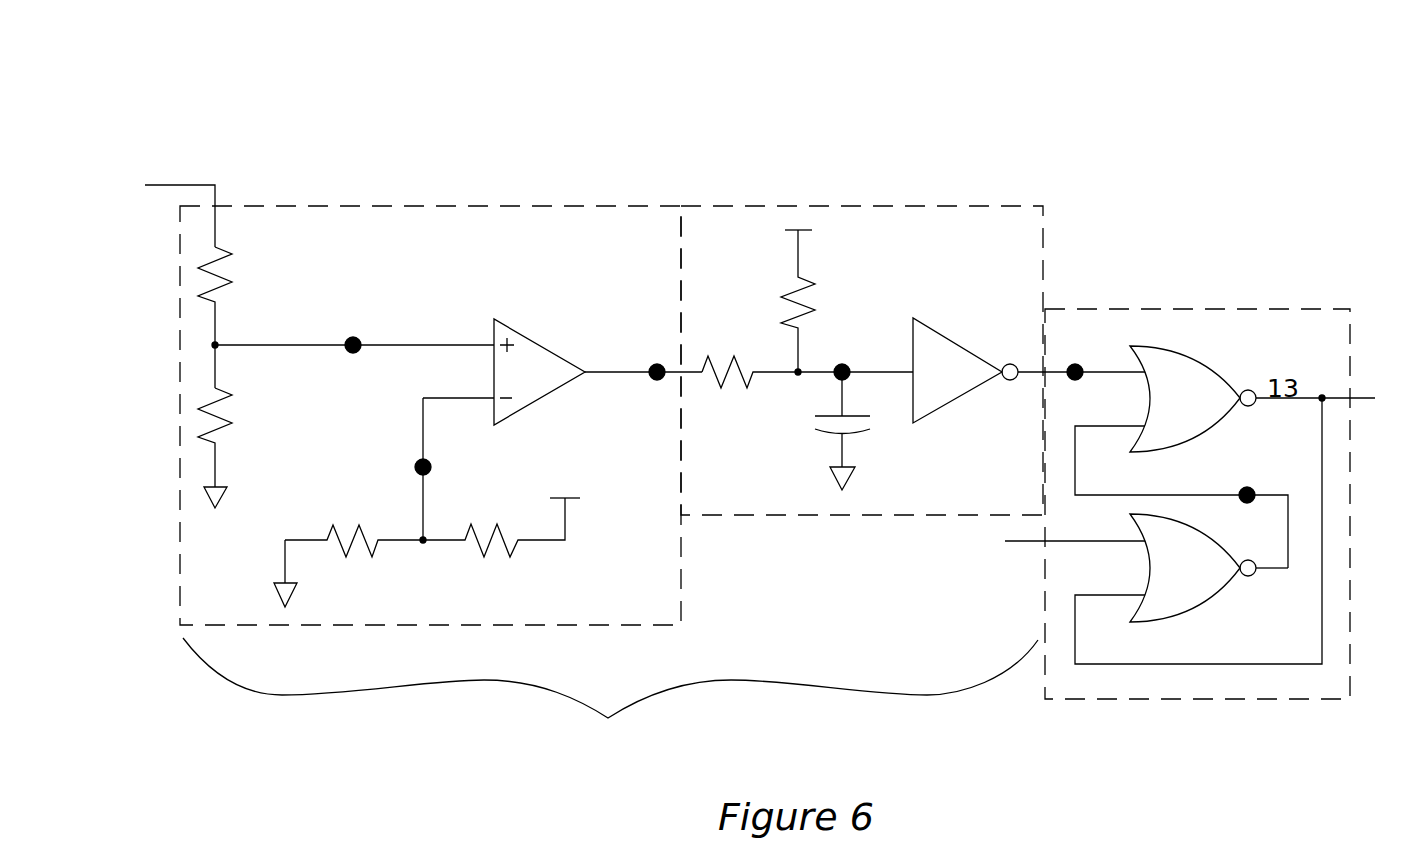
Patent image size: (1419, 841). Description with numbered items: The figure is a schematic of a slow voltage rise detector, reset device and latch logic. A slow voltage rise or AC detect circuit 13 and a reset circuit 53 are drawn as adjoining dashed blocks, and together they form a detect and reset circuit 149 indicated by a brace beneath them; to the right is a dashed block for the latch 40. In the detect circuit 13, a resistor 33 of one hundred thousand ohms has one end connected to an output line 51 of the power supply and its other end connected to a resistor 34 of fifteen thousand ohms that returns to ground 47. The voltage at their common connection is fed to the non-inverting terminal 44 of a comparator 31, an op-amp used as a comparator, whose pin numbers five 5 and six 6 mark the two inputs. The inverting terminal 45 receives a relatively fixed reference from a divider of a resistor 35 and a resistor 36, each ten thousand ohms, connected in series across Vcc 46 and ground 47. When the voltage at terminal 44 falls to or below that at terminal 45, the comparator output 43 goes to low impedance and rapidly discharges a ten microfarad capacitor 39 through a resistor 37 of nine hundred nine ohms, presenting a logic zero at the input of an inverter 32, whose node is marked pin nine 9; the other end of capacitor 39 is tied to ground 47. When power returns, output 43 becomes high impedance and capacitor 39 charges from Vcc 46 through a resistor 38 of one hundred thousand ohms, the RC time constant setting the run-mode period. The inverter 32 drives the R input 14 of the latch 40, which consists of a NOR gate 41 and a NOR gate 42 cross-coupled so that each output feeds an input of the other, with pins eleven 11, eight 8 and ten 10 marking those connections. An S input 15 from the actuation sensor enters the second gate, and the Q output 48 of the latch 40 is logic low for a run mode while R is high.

The slow voltage rise detector 13 is at (413, 206).
The reset circuit 53 is at (878, 206).
The latch 40 is at (1265, 309).
The output line 51 is at (180, 185).
The resistor 33 is at (223, 249).
The resistor 34 is at (223, 390).
The ground 47 is at (205, 498).
The non-inverting terminal 44 is at (403, 343).
The inverting terminal 45 is at (423, 429).
The resistor 36 is at (378, 550).
The resistor 35 is at (516, 550).
The Vcc 46 is at (580, 499).
The comparator 31 is at (510, 327).
The output 43 is at (613, 370).
The resistor 37 is at (736, 386).
The resistor 38 is at (782, 287).
The capacitor 39 is at (815, 425).
The inverter 32 is at (930, 326).
The R input 14 is at (1107, 370).
The NOR gate 41 is at (1190, 365).
The NOR gate 42 is at (1205, 543).
The output 48 is at (1362, 400).
The S input 15 is at (1024, 542).
The detect and reset circuit 149 is at (610, 696).
The comparator pin 5 is at (461, 334).
The comparator pin 6 is at (458, 387).
The NOR gate pin 8 is at (1111, 531).
The pin/node 9 is at (958, 472).
The NOR gate output pin 10 is at (1274, 581).
The NOR gate pin 11 is at (1181, 483).